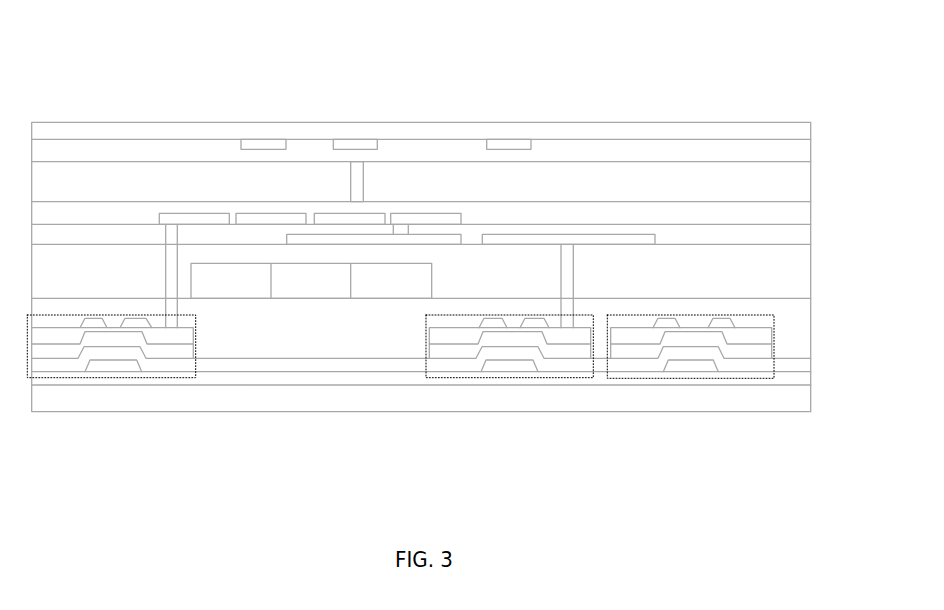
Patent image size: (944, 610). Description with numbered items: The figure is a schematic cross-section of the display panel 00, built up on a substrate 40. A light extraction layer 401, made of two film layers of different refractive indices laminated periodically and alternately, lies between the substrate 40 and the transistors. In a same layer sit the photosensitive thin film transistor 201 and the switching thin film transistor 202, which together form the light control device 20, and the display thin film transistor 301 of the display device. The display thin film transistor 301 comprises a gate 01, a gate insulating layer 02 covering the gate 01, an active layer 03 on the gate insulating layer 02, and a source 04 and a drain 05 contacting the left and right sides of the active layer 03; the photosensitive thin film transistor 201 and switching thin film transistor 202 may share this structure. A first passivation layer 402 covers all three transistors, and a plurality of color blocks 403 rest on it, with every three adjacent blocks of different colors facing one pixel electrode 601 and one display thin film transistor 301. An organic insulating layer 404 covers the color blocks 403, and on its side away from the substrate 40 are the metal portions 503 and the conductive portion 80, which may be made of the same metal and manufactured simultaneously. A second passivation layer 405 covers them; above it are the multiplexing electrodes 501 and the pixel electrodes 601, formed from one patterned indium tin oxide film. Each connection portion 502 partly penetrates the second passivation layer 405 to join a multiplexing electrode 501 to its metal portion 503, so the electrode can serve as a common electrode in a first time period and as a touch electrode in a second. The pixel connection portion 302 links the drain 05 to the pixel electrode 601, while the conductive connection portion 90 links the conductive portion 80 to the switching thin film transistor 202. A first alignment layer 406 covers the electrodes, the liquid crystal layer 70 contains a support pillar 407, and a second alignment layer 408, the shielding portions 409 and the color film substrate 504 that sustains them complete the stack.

The display panel 00 is at (109, 92).
The color film substrate 504 is at (788, 135).
The second alignment layer 408 is at (788, 153).
The shielding portion 409 is at (505, 143).
The liquid crystal layer 70 is at (794, 190).
The support pillar 407 is at (358, 182).
The first alignment layer 406 is at (795, 214).
The pixel electrode 601 is at (184, 216).
The multiplexing electrode 501 is at (299, 217).
The connection portion 502 is at (398, 228).
The metal portion 503 is at (308, 236).
The second passivation layer 405 is at (789, 237).
The conductive portion 80 is at (556, 242).
The conductive connection portion 90 is at (566, 285).
The pixel connection portion 302 is at (172, 243).
The organic insulating layer 404 is at (788, 268).
The color block 403 is at (310, 278).
The first passivation layer 402 is at (788, 340).
The light extraction layer 401 is at (791, 379).
The substrate 40 is at (793, 400).
The display thin film transistor 301 is at (102, 379).
The source 04 is at (57, 337).
The drain 05 is at (184, 337).
The active layer 03 is at (172, 350).
The gate insulating layer 02 is at (160, 366).
The gate 01 is at (129, 364).
The light control device 20 is at (677, 457).
The switching thin film transistor 202 is at (503, 377).
The photosensitive thin film transistor 201 is at (692, 377).